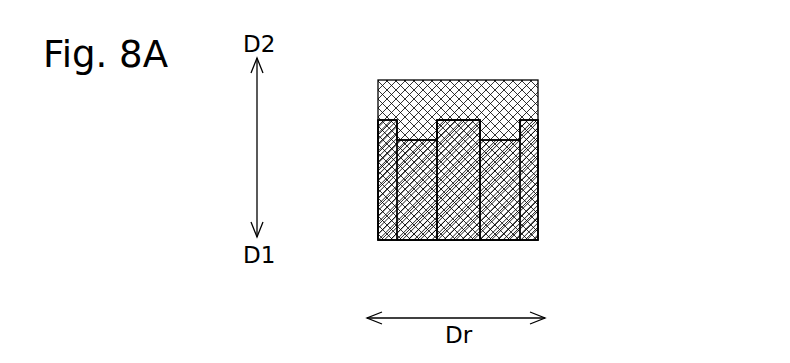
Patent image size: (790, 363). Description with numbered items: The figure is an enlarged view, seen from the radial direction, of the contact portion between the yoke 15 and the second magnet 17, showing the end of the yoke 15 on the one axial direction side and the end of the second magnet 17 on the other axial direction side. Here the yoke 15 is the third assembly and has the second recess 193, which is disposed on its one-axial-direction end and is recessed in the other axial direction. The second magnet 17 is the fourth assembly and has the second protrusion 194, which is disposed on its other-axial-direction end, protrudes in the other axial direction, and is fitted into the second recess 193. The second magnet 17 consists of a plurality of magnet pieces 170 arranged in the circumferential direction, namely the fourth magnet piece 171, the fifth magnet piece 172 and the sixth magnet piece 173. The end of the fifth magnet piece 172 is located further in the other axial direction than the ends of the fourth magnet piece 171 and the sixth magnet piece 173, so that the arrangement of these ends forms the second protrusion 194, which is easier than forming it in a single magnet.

The yoke 15 is at (474, 90).
The second magnet 17 is at (378, 207).
The magnet pieces 170 is at (368, 270).
The fourth magnet piece 171 is at (418, 240).
The fifth magnet piece 172 is at (457, 240).
The sixth magnet piece 173 is at (502, 240).
The second recess 193 is at (452, 120).
The second protrusion 194 is at (378, 167).